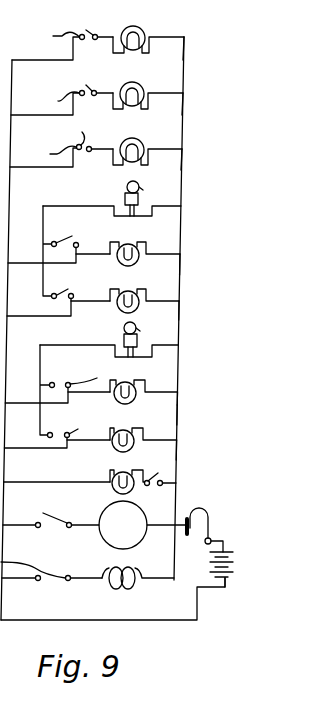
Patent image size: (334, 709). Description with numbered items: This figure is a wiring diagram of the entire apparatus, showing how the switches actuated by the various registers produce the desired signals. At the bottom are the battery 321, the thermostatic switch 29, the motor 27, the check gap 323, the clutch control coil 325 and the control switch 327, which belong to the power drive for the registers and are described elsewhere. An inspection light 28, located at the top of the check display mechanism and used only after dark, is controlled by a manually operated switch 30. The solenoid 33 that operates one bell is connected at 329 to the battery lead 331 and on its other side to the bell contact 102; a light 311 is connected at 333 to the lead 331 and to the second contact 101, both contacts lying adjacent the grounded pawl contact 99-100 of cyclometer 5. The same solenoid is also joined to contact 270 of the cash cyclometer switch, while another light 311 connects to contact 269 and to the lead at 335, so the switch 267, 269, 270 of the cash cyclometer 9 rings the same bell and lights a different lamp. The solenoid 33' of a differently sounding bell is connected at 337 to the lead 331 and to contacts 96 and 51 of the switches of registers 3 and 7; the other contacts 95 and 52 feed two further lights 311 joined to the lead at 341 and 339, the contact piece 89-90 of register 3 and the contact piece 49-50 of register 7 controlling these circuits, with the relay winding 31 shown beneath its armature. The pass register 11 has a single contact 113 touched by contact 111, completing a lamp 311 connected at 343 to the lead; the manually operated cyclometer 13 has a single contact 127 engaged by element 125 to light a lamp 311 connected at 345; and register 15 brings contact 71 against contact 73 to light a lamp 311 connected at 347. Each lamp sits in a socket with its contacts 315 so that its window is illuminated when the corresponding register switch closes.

The contact 111 is at (60, 36).
The single contact 113 is at (89, 28).
The lamp socket contact 315 is at (103, 34).
The light 311 is at (143, 27).
The connection point 343 is at (189, 30).
The register 11 is at (168, 59).
The element 125 is at (60, 101).
The single contact 127 is at (89, 83).
The connection point 345 is at (183, 93).
The manually operated cyclometer 13 is at (166, 112).
The contact 71 is at (58, 154).
The contact 73 is at (89, 135).
The connection point 347 is at (182, 150).
The register 15 is at (164, 167).
The solenoid 33' is at (148, 197).
The connection point 337 is at (181, 207).
The contact 51 is at (73, 226).
The contact 52 is at (80, 243).
The contact piece 49-50 is at (73, 262).
The register 7 is at (155, 275).
The connection point 339 is at (180, 254).
The contact 96 is at (69, 288).
The contact 95 is at (74, 297).
The contact piece 89-90 is at (72, 308).
The register 3 is at (153, 325).
The connection point 341 is at (179, 301).
The relay coil 31 is at (124, 329).
The solenoid 33 is at (143, 329).
The connection point 329 is at (178, 345).
The contact 270 is at (63, 365).
The contact 269 is at (104, 370).
The switch contact 267 is at (70, 405).
The cash cyclometer 9 is at (118, 419).
The connection point 335 is at (178, 392).
The battery lead 331 is at (178, 420).
The bell contact 102 is at (66, 430).
The second contact 101 is at (77, 431).
The pawl contact 99-100 is at (69, 450).
The cyclometer 5 is at (150, 464).
The connection point 333 is at (177, 440).
The inspection light 28 is at (110, 488).
The manually operated switch 30 is at (150, 486).
The thermostatic switch 29 is at (201, 509).
The motor 27 is at (142, 525).
The control switch 327 is at (39, 528).
The check gap 323 is at (40, 581).
The clutch control coil 325 is at (108, 586).
The battery 321 is at (228, 583).